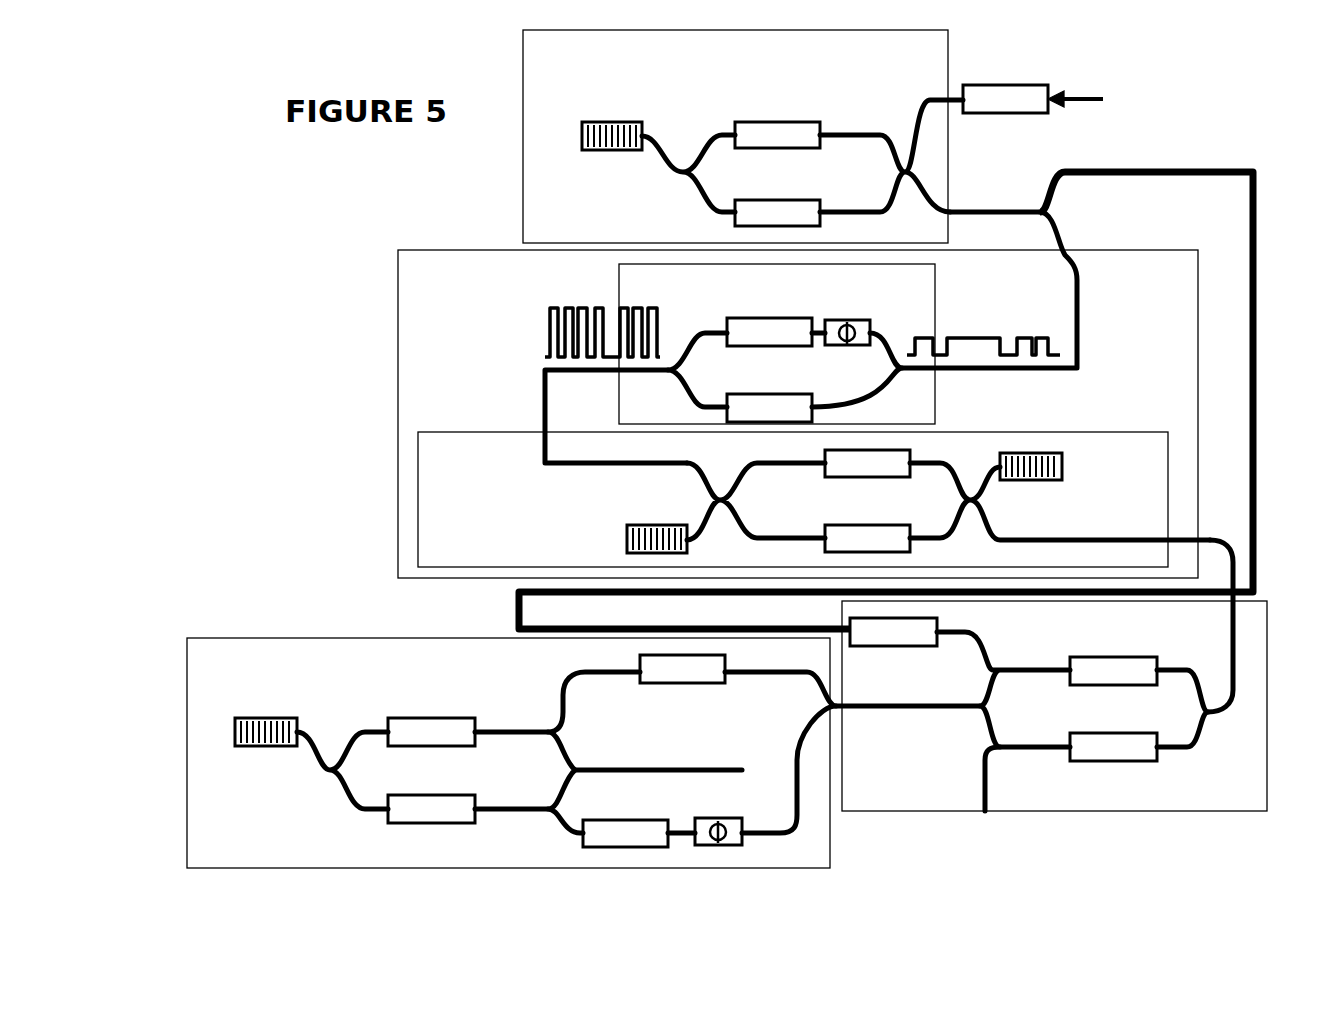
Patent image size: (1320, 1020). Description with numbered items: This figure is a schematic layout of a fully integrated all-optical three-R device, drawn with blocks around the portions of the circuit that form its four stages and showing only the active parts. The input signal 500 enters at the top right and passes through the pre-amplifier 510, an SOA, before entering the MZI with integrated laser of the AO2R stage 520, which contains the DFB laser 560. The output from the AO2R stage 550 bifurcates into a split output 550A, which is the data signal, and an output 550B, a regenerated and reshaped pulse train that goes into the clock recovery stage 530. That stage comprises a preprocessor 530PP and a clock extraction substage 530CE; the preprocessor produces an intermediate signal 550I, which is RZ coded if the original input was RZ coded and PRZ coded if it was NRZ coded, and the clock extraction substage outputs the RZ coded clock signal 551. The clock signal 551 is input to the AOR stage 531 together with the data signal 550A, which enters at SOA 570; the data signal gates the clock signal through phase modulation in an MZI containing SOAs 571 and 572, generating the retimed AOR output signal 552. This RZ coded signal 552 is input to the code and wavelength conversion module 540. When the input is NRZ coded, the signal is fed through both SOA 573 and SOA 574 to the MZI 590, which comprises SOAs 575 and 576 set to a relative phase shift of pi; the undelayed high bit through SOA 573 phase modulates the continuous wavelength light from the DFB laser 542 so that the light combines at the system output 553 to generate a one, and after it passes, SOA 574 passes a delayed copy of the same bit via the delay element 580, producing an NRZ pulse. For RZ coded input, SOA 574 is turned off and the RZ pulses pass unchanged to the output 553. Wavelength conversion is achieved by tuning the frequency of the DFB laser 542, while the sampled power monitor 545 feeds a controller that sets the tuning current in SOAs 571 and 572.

The input signal 500 is at (1188, 84).
The pre-amplifier 510 is at (997, 85).
The AO2R stage 520 is at (697, 136).
The clock recovery stage 530 is at (1198, 337).
The preprocessor substage 530PP is at (619, 283).
The clock extraction substage 530CE is at (450, 432).
The AOR stage 531 is at (1076, 720).
The code and wavelength conversion module 540 is at (511, 743).
The DFB-2R laser 542 is at (250, 777).
The power monitor 545 is at (1014, 793).
The output from the AO2R stage 550 is at (988, 207).
The split output 550A is at (1145, 168).
The output to clock recovery 550B is at (1055, 240).
The intermediate signal 550I is at (547, 410).
The clock signal 551 is at (1235, 644).
The AOR output signal 552 is at (883, 709).
The system output 553 is at (652, 773).
The DFB-2R laser 560 is at (608, 180).
The SOA 570 is at (925, 647).
The SOA 571 is at (1127, 685).
The SOA 572 is at (1137, 762).
The SOA 573 is at (673, 683).
The SOA 574 is at (598, 819).
The SOA 575 is at (431, 747).
The SOA 576 is at (431, 828).
The delay element 580 is at (717, 818).
The MZI 590 is at (430, 807).